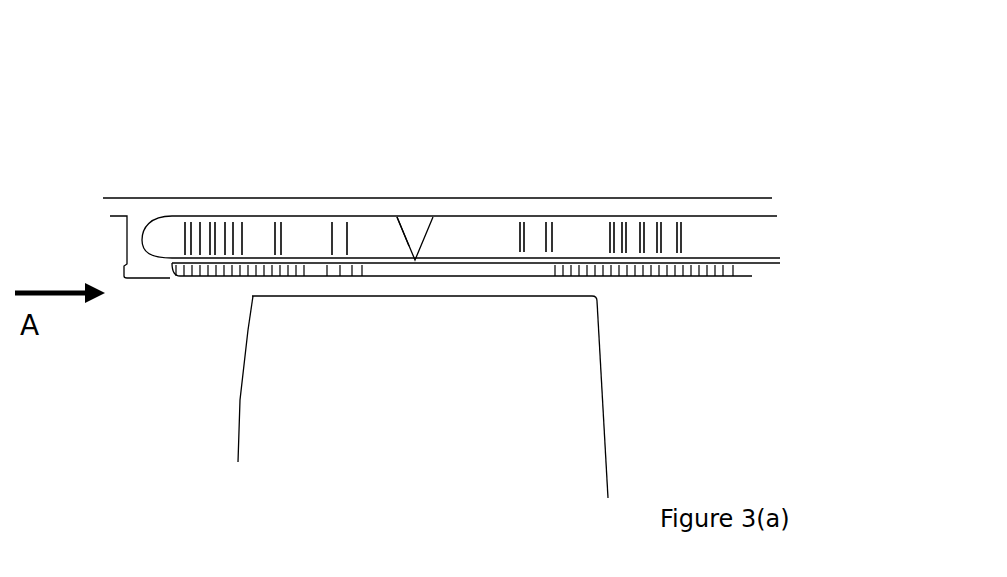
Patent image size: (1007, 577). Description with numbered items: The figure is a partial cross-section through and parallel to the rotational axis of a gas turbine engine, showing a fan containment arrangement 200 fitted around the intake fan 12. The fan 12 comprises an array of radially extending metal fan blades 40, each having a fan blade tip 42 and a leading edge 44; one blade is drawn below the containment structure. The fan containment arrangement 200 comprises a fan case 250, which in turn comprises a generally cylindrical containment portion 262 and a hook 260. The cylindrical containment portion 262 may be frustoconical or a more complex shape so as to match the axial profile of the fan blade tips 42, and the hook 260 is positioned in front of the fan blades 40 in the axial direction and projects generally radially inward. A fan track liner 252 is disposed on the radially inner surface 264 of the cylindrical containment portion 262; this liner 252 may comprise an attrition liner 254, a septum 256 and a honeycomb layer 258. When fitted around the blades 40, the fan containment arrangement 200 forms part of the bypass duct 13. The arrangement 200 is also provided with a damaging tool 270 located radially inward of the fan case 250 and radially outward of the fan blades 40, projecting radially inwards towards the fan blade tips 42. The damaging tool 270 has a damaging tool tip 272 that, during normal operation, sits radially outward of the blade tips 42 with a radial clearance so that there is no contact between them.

The fan containment arrangement 200 is at (514, 80).
The generally cylindrical containment portion 262 is at (475, 208).
The fan case 250 is at (577, 208).
The hook 260 is at (140, 256).
The honeycomb layer 258 is at (213, 240).
The septum 256 is at (260, 243).
The radially inner surface 264 is at (600, 236).
The damaging tool tip 272 is at (415, 260).
The damaging tool 270 is at (412, 232).
The fan track liner 252 is at (690, 242).
The fan blade tip 42 is at (298, 282).
The attrition liner 254 is at (522, 312).
The leading edge 44 is at (238, 328).
The fan blade 40 is at (333, 379).
The intake fan 12 is at (203, 410).
The bypass duct 13 is at (772, 426).